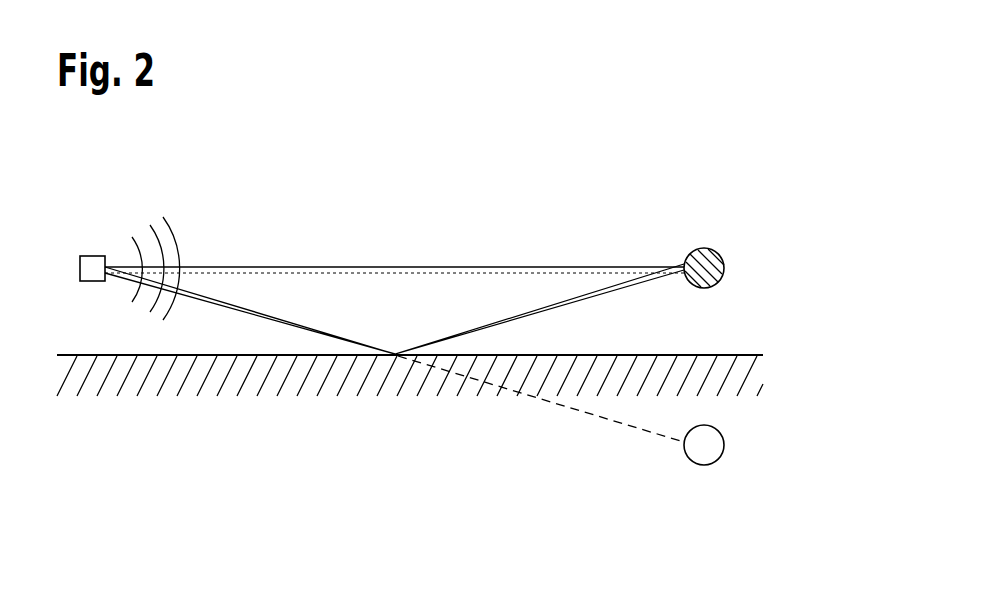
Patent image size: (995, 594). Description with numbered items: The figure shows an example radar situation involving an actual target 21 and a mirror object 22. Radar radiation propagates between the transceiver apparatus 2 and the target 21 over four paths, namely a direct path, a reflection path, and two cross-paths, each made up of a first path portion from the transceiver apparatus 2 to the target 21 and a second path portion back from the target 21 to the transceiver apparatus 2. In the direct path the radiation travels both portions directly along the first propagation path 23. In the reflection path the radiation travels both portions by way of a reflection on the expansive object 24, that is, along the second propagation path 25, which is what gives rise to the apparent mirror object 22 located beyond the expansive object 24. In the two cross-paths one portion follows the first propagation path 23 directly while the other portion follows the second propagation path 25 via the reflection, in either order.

The transceiver apparatus 2 is at (92, 255).
The actual target 21 is at (703, 248).
The mirror object 22 is at (703, 466).
The first propagation path 23 is at (305, 266).
The expansive object 24 is at (333, 385).
The second propagation path 25 is at (540, 309).